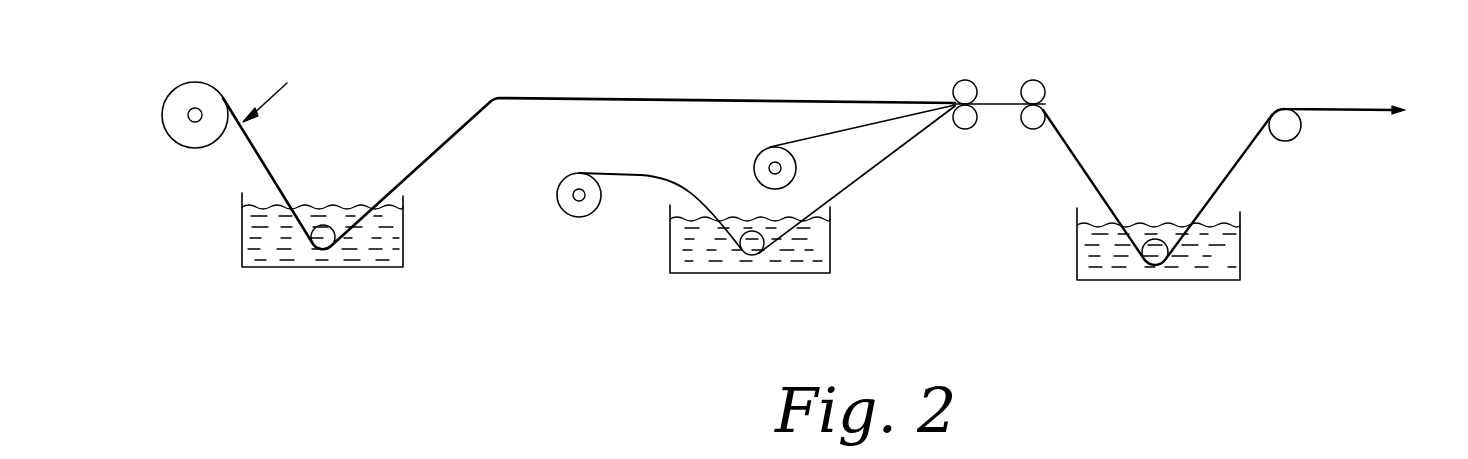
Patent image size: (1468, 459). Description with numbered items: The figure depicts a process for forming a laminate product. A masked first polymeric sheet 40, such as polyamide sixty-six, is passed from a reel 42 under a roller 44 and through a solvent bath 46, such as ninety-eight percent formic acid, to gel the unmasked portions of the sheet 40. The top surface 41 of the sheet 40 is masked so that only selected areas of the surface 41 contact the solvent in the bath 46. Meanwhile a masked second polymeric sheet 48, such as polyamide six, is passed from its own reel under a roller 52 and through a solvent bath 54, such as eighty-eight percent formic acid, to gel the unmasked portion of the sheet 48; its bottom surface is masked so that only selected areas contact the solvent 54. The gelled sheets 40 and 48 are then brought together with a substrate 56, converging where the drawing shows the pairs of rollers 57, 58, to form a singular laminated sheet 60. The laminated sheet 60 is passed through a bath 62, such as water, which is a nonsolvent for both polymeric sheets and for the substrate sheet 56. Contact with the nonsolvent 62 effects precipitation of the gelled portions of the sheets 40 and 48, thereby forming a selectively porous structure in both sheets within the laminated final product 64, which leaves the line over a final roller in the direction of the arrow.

The first polymeric sheet 40 is at (265, 160).
The top surface 41 is at (280, 91).
The reel 42 is at (187, 138).
The roller 44 is at (322, 242).
The solvent bath 46 is at (367, 258).
The second polymeric sheet 48 is at (640, 175).
The roller 52 is at (750, 248).
The solvent bath 54 is at (807, 268).
The substrate 56 is at (825, 137).
The upper nip rollers 57 is at (1022, 85).
The lower nip rollers 58 is at (1022, 122).
The laminated sheet 60 is at (1083, 168).
The bath 62 is at (1205, 277).
The laminated final product 64 is at (1335, 108).